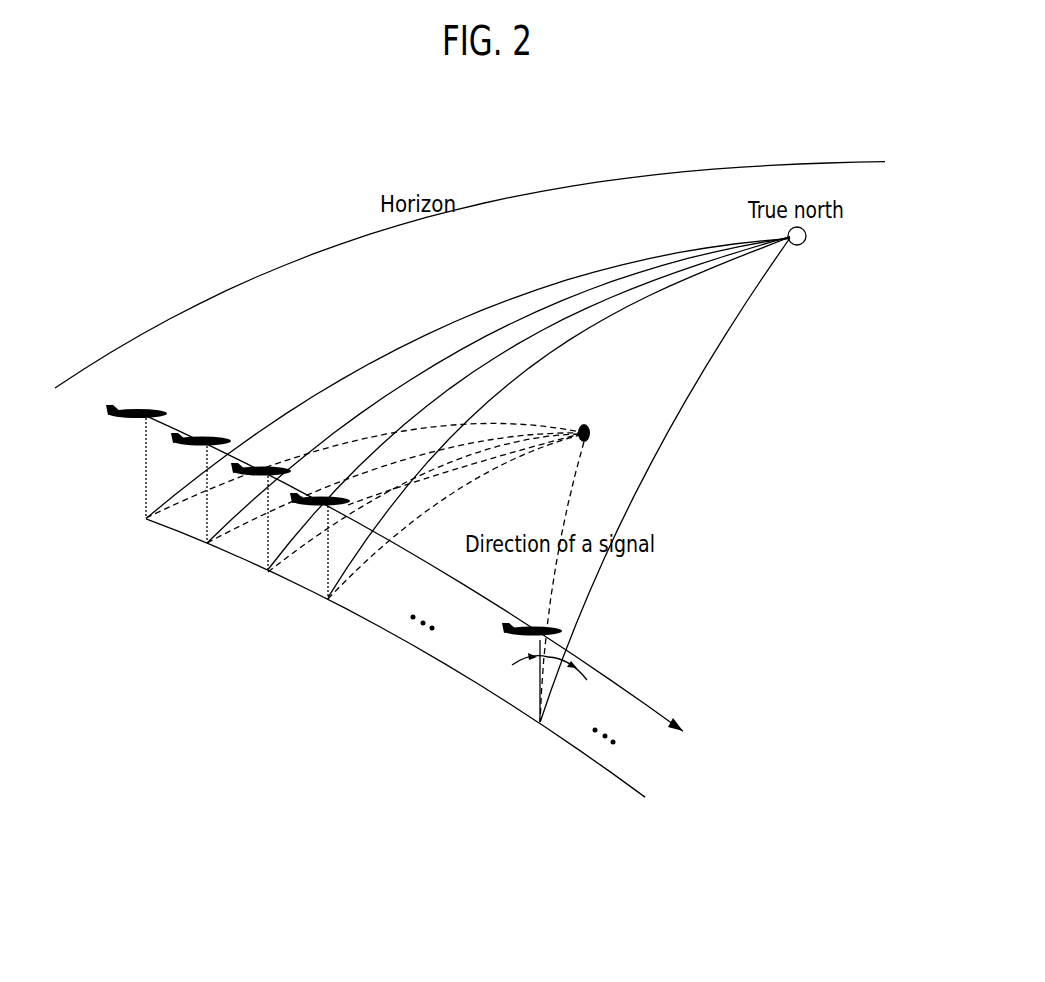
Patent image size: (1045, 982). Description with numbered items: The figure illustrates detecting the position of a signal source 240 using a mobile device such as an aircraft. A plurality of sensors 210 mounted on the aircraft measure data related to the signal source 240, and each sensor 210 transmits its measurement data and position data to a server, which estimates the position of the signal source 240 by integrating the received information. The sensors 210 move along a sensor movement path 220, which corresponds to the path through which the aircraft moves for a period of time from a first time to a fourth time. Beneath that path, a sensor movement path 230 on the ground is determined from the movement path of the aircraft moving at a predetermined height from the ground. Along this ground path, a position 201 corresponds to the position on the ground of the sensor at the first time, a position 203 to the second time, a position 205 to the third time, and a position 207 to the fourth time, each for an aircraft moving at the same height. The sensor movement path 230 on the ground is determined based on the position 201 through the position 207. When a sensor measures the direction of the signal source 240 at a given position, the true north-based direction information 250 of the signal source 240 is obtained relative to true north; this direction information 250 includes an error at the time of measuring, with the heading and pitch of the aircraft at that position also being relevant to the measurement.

The position 201 is at (144, 521).
The position 203 is at (205, 546).
The position 205 is at (266, 574).
The position 207 is at (326, 602).
The sensor 210 is at (172, 393).
The sensor movement path 220 is at (788, 697).
The sensor movement path on the ground 230 is at (745, 803).
The signal source 240 is at (610, 393).
The true north-based direction information 250 is at (552, 658).